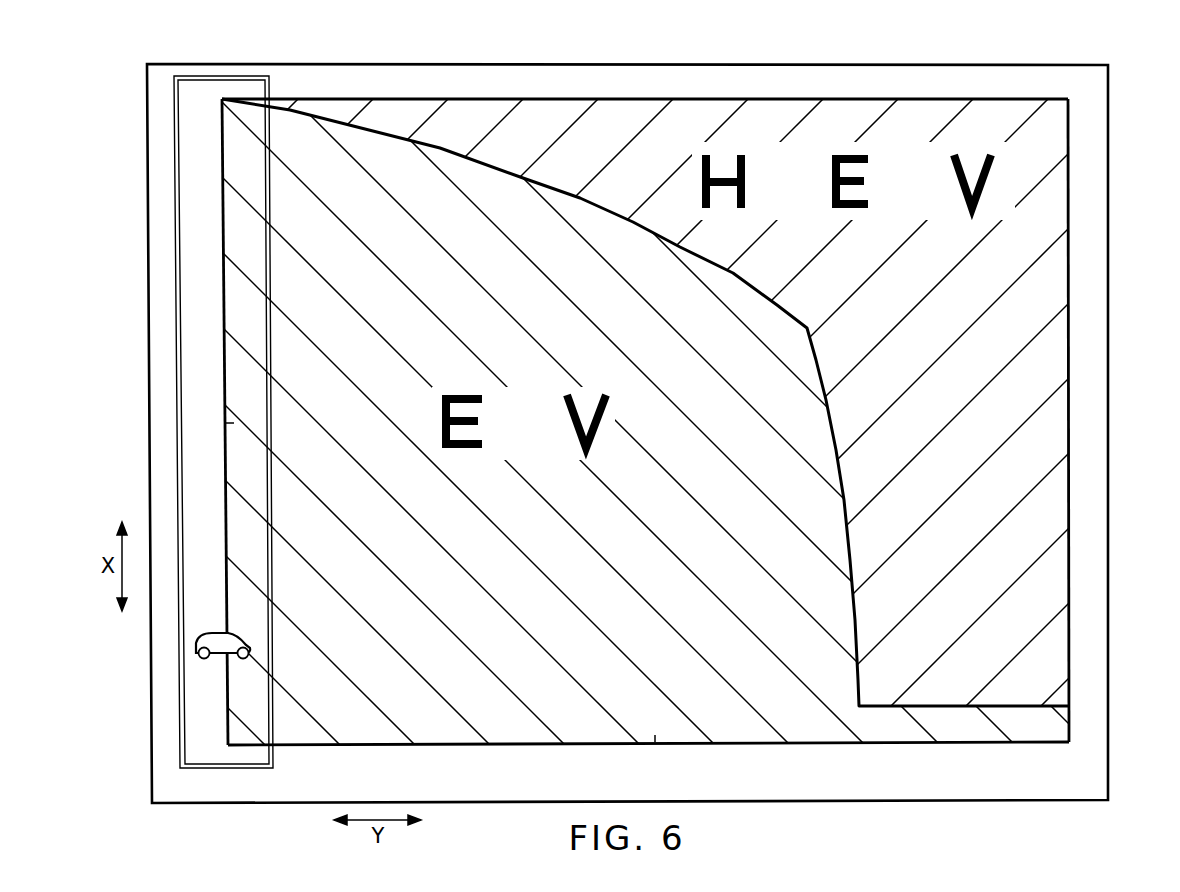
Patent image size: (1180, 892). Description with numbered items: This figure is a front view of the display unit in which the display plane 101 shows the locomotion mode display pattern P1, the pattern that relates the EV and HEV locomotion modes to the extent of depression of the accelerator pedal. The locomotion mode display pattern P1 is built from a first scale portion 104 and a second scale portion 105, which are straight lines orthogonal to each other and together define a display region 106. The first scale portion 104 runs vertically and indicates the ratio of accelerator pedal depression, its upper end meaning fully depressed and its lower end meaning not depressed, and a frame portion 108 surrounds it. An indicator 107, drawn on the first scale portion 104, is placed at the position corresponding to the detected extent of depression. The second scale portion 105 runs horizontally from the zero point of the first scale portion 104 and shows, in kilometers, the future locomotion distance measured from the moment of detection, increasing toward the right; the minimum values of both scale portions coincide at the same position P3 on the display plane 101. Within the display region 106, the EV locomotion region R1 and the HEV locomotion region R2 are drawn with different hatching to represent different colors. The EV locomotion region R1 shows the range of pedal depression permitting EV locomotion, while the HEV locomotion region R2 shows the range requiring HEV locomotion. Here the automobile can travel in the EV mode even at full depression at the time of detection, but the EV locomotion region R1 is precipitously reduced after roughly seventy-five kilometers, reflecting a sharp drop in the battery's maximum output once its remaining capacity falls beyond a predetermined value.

The display plane 101 is at (523, 81).
The frame portion 108 is at (227, 78).
The display region 106 is at (655, 112).
The locomotion mode display pattern P1 is at (858, 104).
The first scale portion 104 is at (223, 351).
The second scale portion 105 is at (955, 745).
The indicator 107 is at (196, 651).
The position of minimum values P3 is at (225, 748).
The EV locomotion region R1 is at (816, 745).
The HEV locomotion region R2 is at (1054, 380).